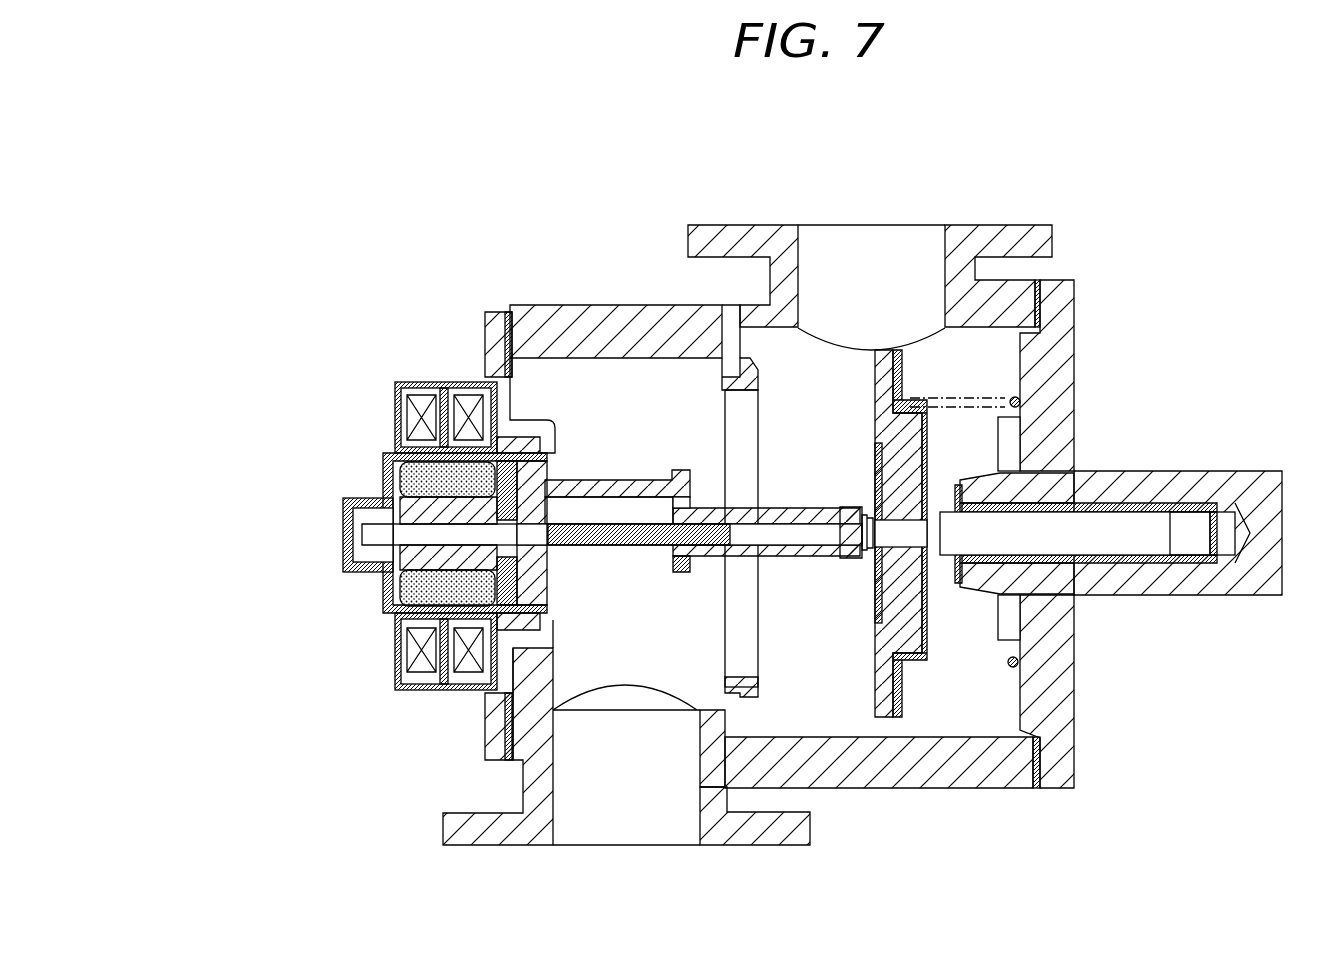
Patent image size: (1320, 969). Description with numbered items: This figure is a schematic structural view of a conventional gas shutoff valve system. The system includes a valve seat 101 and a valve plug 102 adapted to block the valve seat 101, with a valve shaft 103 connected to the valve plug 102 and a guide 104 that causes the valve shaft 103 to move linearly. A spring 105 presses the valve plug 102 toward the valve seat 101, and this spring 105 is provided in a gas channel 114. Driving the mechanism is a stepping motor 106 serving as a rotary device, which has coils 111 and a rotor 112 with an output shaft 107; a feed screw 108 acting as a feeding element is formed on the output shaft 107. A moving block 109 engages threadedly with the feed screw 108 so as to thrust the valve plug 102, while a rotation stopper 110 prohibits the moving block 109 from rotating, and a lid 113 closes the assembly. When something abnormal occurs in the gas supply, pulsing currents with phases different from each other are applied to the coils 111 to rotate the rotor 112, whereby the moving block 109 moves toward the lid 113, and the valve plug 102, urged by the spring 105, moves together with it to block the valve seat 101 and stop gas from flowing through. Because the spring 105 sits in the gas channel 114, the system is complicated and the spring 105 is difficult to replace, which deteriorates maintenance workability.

The valve seat 101 is at (748, 358).
The valve plug 102 is at (890, 350).
The valve shaft 103 is at (952, 487).
The guide 104 is at (1150, 500).
The spring 105 is at (992, 398).
The stepping motor 106 is at (395, 417).
The output shaft 107 is at (372, 565).
The feed screw 108 is at (592, 562).
The moving block 109 is at (802, 556).
The rotation stopper 110 is at (620, 478).
The coils 111 is at (395, 660).
The rotor 112 is at (355, 481).
The lid 113 is at (617, 546).
The gas channel 114 is at (818, 262).